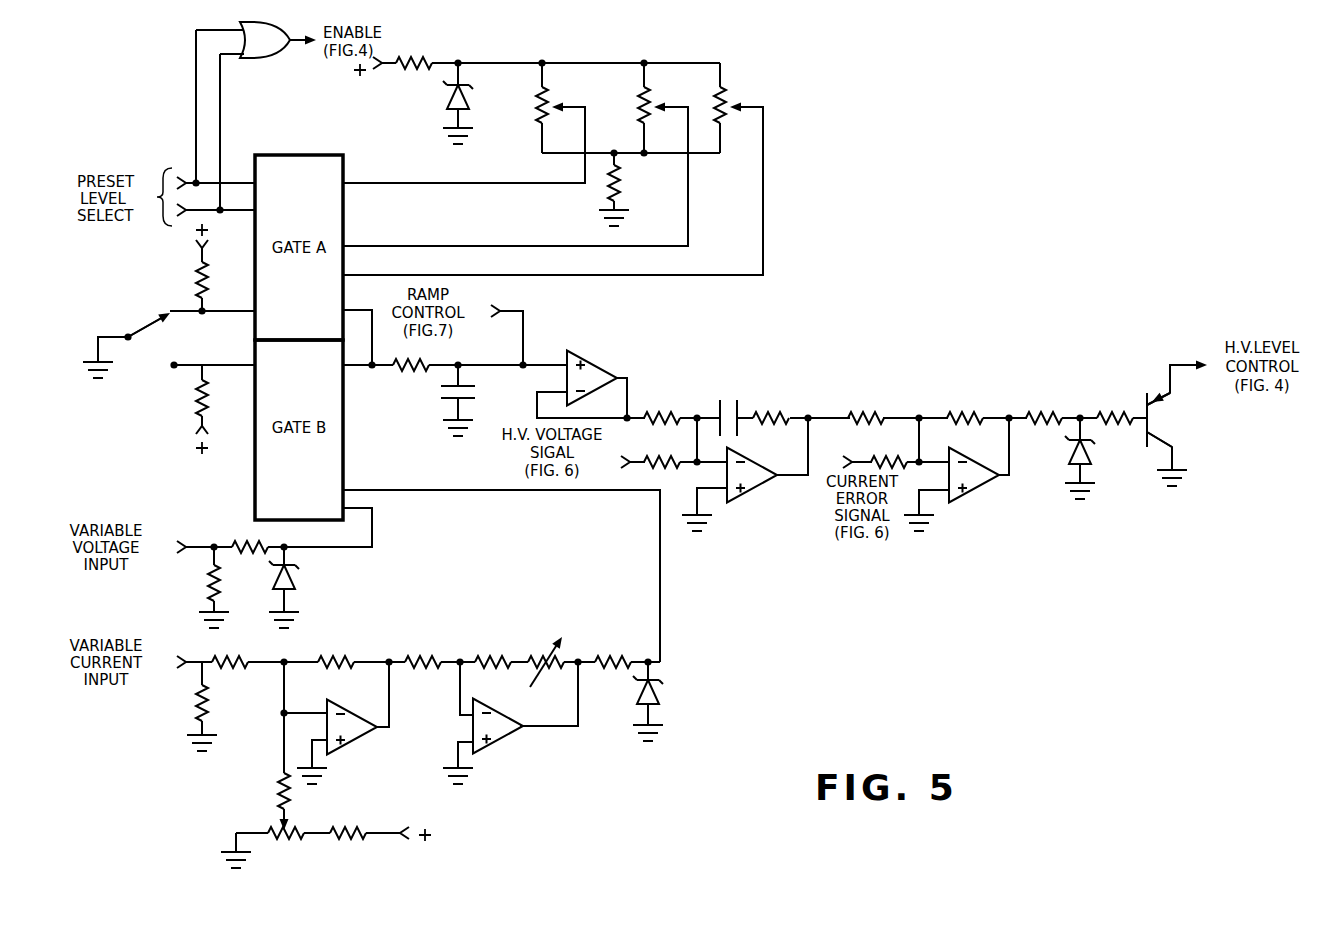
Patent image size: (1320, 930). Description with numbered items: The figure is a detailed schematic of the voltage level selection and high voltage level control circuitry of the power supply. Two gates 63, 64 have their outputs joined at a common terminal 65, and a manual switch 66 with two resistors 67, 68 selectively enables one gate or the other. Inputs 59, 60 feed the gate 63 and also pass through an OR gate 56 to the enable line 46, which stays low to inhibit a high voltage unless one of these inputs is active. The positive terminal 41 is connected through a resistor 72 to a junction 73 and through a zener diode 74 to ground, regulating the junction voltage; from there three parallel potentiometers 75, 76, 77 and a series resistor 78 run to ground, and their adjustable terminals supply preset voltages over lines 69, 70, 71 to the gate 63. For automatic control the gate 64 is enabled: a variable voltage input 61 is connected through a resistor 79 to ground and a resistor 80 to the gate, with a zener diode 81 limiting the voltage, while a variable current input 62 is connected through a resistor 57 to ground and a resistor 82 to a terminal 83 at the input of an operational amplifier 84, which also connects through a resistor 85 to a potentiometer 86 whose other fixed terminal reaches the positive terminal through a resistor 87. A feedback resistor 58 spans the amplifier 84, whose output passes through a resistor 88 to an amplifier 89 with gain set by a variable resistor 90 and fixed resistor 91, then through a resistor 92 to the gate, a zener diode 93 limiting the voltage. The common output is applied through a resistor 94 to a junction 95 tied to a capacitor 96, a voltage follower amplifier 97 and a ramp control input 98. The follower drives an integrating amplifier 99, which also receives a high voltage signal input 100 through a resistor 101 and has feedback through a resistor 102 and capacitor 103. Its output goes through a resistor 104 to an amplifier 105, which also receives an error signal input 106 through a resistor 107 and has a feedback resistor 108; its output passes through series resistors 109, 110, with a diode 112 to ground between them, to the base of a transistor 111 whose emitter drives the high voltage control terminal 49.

The positive terminal 41 is at (206, 245).
The enable line 46 is at (296, 45).
The high voltage control terminal 49 is at (1185, 362).
The OR gate 56 is at (263, 60).
The resistor 57 is at (193, 718).
The feedback resistor 58 is at (347, 656).
The input 59 is at (193, 178).
The input 60 is at (193, 213).
The variable voltage input 61 is at (192, 545).
The variable current input 62 is at (186, 668).
The gate 63 is at (290, 153).
The gate 64 is at (345, 435).
The terminal 65 is at (372, 372).
The manual switch 66 is at (142, 330).
The resistor 67 is at (197, 290).
The resistor 68 is at (197, 408).
The line 69 is at (405, 186).
The line 70 is at (455, 245).
The line 71 is at (580, 278).
The resistor 72 is at (417, 58).
The junction 73 is at (498, 62).
The zener diode 74 is at (442, 100).
The potentiometer 75 is at (533, 107).
The potentiometer 76 is at (636, 102).
The potentiometer 77 is at (735, 97).
The series resistor 78 is at (605, 200).
The resistor 79 is at (205, 592).
The resistor 80 is at (252, 540).
The zener diode 81 is at (298, 585).
The resistor 82 is at (240, 655).
The terminal 83 is at (280, 665).
The operational amplifier 84 is at (358, 743).
The resistor 85 is at (278, 800).
The potentiometer 86 is at (290, 843).
The resistor 87 is at (355, 842).
The resistor 88 is at (440, 652).
The amplifier 89 is at (502, 745).
The variable resistor 90 is at (545, 645).
The fixed resistor 91 is at (498, 652).
The resistor 92 is at (615, 652).
The zener diode 93 is at (662, 690).
The resistor 94 is at (410, 380).
The junction 95 is at (462, 362).
The capacitor 96 is at (468, 398).
The voltage follower amplifier 97 is at (598, 368).
The ramp control input 98 is at (672, 410).
The integrating amplifier 99 is at (748, 497).
The high voltage signal input 100 is at (625, 456).
The resistor 101 is at (665, 472).
The resistor 102 is at (783, 410).
The capacitor 103 is at (740, 408).
The resistor 104 is at (868, 410).
The amplifier 105 is at (968, 495).
The error signal input 106 is at (845, 462).
The resistor 107 is at (872, 458).
The feedback resistor 108 is at (968, 410).
The series resistor 109 is at (1042, 410).
The series resistor 110 is at (1112, 410).
The transistor 111 is at (1140, 445).
The diode 112 is at (1072, 455).